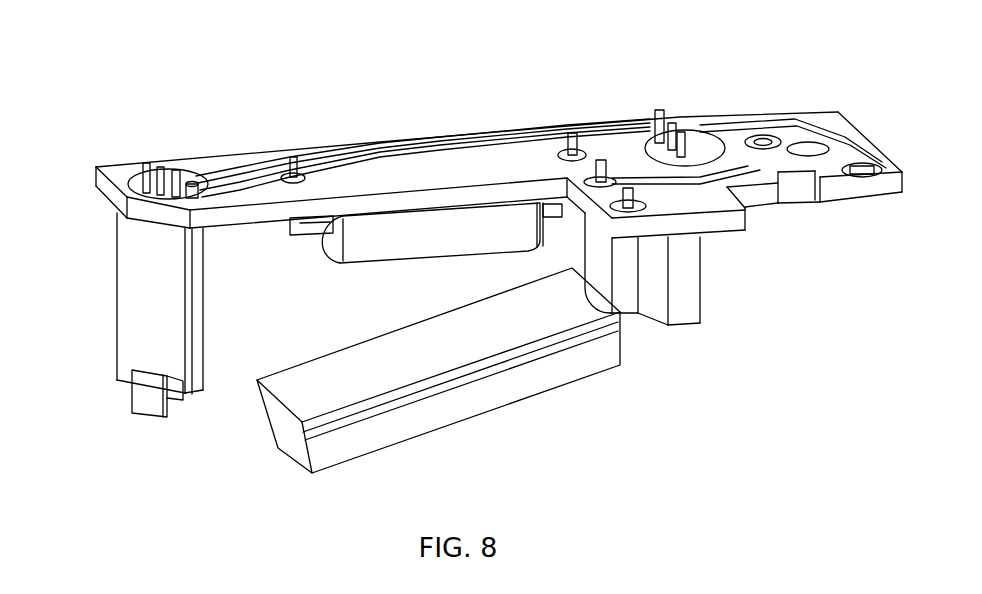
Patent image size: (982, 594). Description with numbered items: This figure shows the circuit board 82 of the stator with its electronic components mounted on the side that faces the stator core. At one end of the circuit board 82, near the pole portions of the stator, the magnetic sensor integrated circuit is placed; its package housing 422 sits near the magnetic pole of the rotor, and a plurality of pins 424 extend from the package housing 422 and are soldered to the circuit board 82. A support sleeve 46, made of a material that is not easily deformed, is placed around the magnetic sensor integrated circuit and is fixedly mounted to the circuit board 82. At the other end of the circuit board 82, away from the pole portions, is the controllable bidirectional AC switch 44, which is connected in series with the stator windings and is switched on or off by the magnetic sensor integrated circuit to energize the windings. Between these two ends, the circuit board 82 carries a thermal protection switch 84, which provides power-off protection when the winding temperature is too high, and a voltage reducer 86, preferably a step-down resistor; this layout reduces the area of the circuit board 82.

The pins 424 is at (145, 163).
The voltage reducer 86 is at (438, 228).
The circuit board 82 is at (710, 128).
The support sleeve 46 is at (152, 278).
The controllable bidirectional AC switch 44 is at (682, 280).
The package housing 422 is at (158, 392).
The thermal protection switch 84 is at (430, 412).